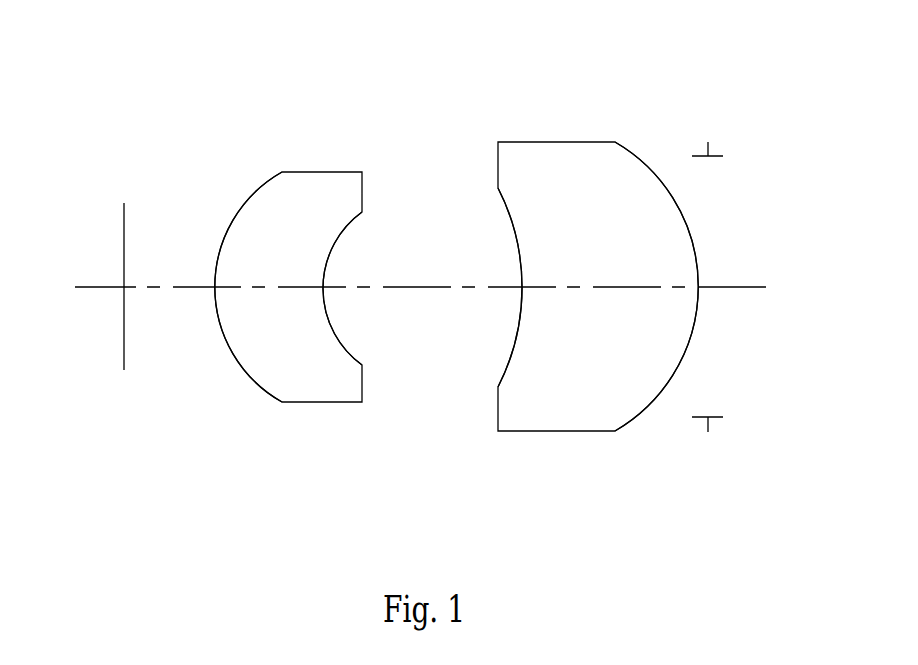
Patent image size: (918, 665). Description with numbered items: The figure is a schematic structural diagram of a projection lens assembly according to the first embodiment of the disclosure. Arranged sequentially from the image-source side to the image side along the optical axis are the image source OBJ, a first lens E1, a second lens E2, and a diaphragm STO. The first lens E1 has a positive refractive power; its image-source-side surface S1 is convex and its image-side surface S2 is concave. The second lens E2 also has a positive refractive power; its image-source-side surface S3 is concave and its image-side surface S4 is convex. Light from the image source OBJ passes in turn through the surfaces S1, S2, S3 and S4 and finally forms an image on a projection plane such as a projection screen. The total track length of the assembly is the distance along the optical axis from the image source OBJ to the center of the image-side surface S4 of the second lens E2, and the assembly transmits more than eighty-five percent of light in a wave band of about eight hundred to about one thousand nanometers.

The image source OBJ is at (124, 287).
The first lens E1 is at (310, 172).
The second lens E2 is at (555, 142).
The image-source-side surface of the first lens S1 is at (215, 287).
The image-side surface of the first lens S2 is at (323, 287).
The image-source-side surface of the second lens S3 is at (522, 287).
The image-side surface of the second lens S4 is at (698, 287).
The diaphragm STO is at (708, 156).